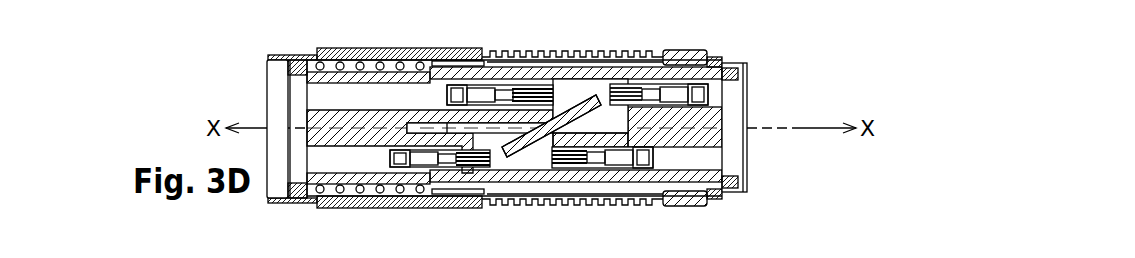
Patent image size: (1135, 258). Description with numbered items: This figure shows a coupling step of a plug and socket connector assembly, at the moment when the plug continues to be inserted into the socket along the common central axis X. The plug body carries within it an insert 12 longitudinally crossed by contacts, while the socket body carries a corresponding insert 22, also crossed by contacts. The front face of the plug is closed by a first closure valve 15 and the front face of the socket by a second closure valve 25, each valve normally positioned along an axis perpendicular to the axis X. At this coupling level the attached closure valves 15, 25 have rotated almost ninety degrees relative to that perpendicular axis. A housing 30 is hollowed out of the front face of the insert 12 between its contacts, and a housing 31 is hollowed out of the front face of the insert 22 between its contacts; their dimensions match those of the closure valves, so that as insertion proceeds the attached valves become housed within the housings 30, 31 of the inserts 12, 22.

The insert 12 is at (708, 117).
The first closure valve 15 is at (601, 102).
The insert 22 is at (327, 134).
The second closure valve 25 is at (588, 92).
The housing 30 is at (616, 118).
The housing 31 is at (435, 128).